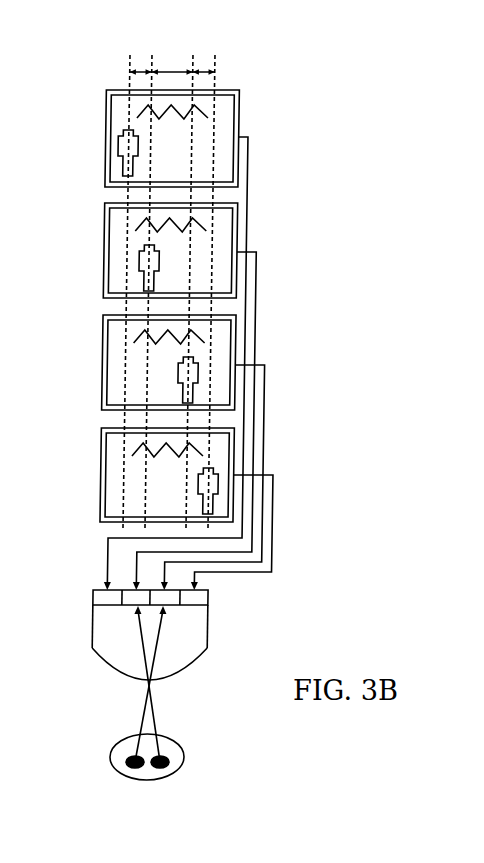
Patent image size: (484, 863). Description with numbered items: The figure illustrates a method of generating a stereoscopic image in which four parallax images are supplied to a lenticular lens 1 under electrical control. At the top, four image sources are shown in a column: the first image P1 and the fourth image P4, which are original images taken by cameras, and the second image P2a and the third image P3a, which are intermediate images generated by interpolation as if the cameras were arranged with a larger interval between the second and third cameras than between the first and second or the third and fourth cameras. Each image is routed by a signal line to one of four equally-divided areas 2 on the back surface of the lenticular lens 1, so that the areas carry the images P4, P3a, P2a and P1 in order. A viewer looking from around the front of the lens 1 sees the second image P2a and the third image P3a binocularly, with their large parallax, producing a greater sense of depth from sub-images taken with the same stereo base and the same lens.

The lenticular lens 1 is at (205, 650).
The back surface areas of the lenticular lens 2 is at (228, 597).
The fourth image P4 is at (107, 137).
The third image P3a is at (107, 251).
The second image P2a is at (106, 362).
The first image P1 is at (107, 472).